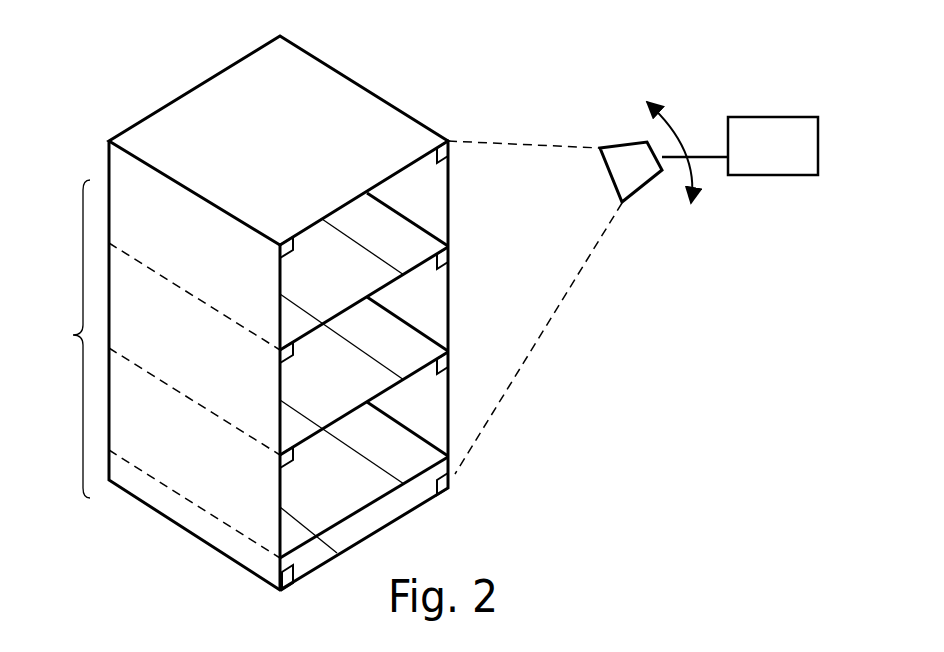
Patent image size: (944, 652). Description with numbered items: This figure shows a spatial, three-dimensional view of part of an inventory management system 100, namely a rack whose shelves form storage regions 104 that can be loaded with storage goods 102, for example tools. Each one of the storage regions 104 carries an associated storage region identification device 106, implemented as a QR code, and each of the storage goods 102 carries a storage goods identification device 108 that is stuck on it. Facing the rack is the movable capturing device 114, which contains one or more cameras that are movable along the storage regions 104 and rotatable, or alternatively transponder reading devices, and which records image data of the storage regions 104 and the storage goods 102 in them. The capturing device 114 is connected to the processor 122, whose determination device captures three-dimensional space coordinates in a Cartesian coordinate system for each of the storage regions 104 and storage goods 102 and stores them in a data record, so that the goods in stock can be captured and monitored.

The inventory management system 100 is at (114, 108).
The storage goods 102 is at (440, 217).
The storage regions 104 is at (57, 339).
The storage region identification devices 106 is at (278, 244).
The storage goods identification device 108 is at (388, 508).
The capturing device 114 is at (632, 158).
The processor 122 is at (740, 146).